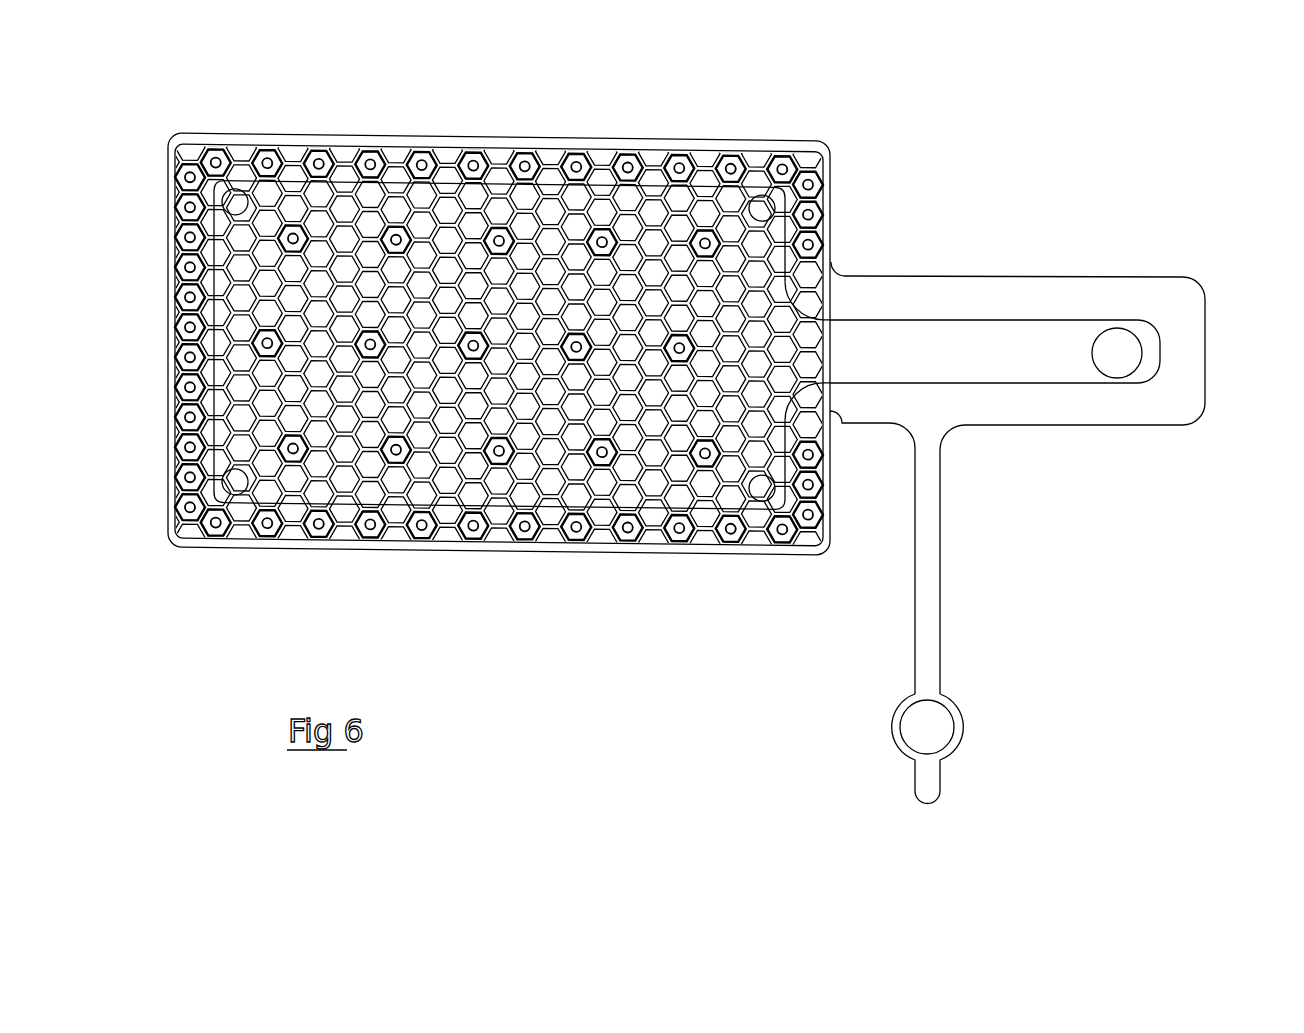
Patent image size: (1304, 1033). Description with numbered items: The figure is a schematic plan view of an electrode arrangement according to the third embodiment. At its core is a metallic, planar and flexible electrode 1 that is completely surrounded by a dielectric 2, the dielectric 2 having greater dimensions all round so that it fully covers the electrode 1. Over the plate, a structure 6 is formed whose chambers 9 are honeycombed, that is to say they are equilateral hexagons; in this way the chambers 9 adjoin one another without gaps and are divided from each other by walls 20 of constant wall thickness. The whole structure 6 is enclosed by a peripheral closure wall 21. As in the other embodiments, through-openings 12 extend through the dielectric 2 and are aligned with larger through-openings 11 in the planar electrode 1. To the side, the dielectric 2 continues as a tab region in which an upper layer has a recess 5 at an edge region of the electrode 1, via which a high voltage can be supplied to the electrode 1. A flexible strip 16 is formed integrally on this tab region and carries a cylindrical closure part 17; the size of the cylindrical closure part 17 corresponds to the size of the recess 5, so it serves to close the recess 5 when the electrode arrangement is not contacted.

The electrode 1 is at (787, 195).
The dielectric 2 is at (1130, 297).
The recess 5 is at (1120, 363).
The structure 6 is at (728, 157).
The chambers 9 is at (755, 244).
The through-openings 11 is at (523, 203).
The through-openings 12 is at (497, 228).
The flexible strip 16 is at (932, 592).
The cylindrical closure part 17 is at (933, 732).
The walls 20 is at (613, 200).
The peripheral closure wall 21 is at (593, 152).